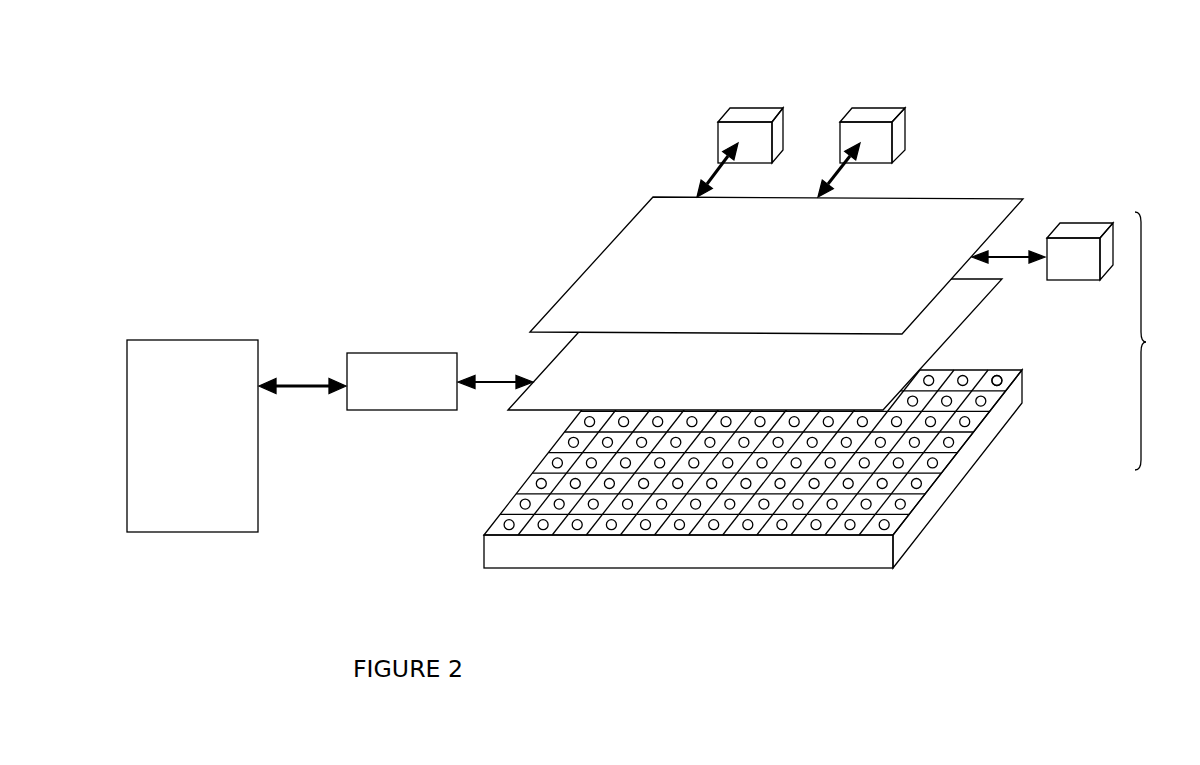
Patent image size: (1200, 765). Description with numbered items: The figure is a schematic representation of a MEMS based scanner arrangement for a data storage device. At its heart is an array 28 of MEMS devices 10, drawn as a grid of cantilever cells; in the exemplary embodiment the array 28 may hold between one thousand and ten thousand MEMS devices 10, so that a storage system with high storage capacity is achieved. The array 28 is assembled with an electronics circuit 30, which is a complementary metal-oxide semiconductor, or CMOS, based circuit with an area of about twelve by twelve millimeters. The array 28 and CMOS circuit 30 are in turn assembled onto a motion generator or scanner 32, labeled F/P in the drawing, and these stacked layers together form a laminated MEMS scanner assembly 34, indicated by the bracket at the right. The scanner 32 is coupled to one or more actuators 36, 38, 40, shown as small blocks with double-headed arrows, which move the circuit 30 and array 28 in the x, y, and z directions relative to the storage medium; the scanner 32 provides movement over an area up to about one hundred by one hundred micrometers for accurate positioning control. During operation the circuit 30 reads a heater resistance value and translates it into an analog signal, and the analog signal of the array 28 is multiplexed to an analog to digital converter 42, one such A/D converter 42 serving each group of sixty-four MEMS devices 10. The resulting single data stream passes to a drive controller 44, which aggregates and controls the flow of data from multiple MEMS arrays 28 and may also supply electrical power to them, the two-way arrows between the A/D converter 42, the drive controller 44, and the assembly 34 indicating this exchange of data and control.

The MEMS device 10 is at (1002, 380).
The array 28 is at (927, 503).
The electronics circuit 30 is at (980, 304).
The scanner 32 is at (927, 197).
The MEMS scanner assembly 34 is at (1157, 341).
The actuator 36 is at (1082, 222).
The actuator 38 is at (872, 108).
The actuator 40 is at (760, 107).
The A/D converter 42 is at (367, 353).
The drive controller 44 is at (152, 340).